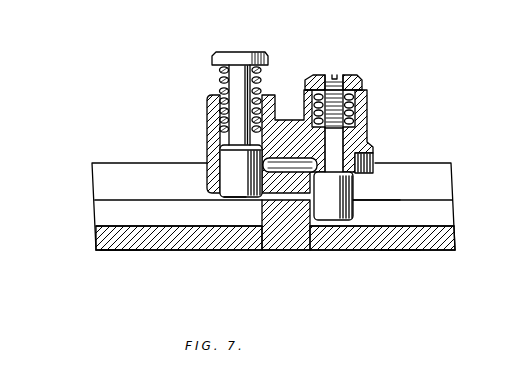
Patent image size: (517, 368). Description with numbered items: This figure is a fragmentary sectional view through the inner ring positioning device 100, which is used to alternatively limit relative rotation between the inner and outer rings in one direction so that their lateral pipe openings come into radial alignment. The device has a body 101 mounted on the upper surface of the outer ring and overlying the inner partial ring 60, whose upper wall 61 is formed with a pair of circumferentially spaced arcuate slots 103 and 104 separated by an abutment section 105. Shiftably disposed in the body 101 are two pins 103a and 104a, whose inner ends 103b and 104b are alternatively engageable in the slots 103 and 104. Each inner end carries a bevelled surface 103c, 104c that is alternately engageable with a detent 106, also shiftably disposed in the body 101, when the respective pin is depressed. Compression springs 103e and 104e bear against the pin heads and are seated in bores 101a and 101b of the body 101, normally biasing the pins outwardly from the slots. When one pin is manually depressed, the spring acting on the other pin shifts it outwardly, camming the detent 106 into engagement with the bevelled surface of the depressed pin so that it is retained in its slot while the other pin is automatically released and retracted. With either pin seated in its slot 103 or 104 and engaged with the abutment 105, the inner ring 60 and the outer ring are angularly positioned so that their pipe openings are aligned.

The inner ring positioning device 100 is at (372, 111).
The body 101 is at (368, 140).
The bore 101a is at (367, 126).
The bore 101b is at (220, 127).
The arcuate slot 103 is at (442, 227).
The pin 103a is at (358, 187).
The inner end 103b is at (337, 222).
The bevelled surface 103c is at (374, 172).
The compression spring 103e is at (358, 91).
The arcuate slot 104 is at (104, 209).
The pin 104a is at (226, 182).
The inner end 104b is at (224, 197).
The bevelled surface 104c is at (220, 150).
The compression spring 104e is at (222, 82).
The abutment section 105 is at (263, 215).
The detent 106 is at (290, 168).
The inner partial ring 60 is at (401, 247).
The upper wall 61 is at (124, 240).